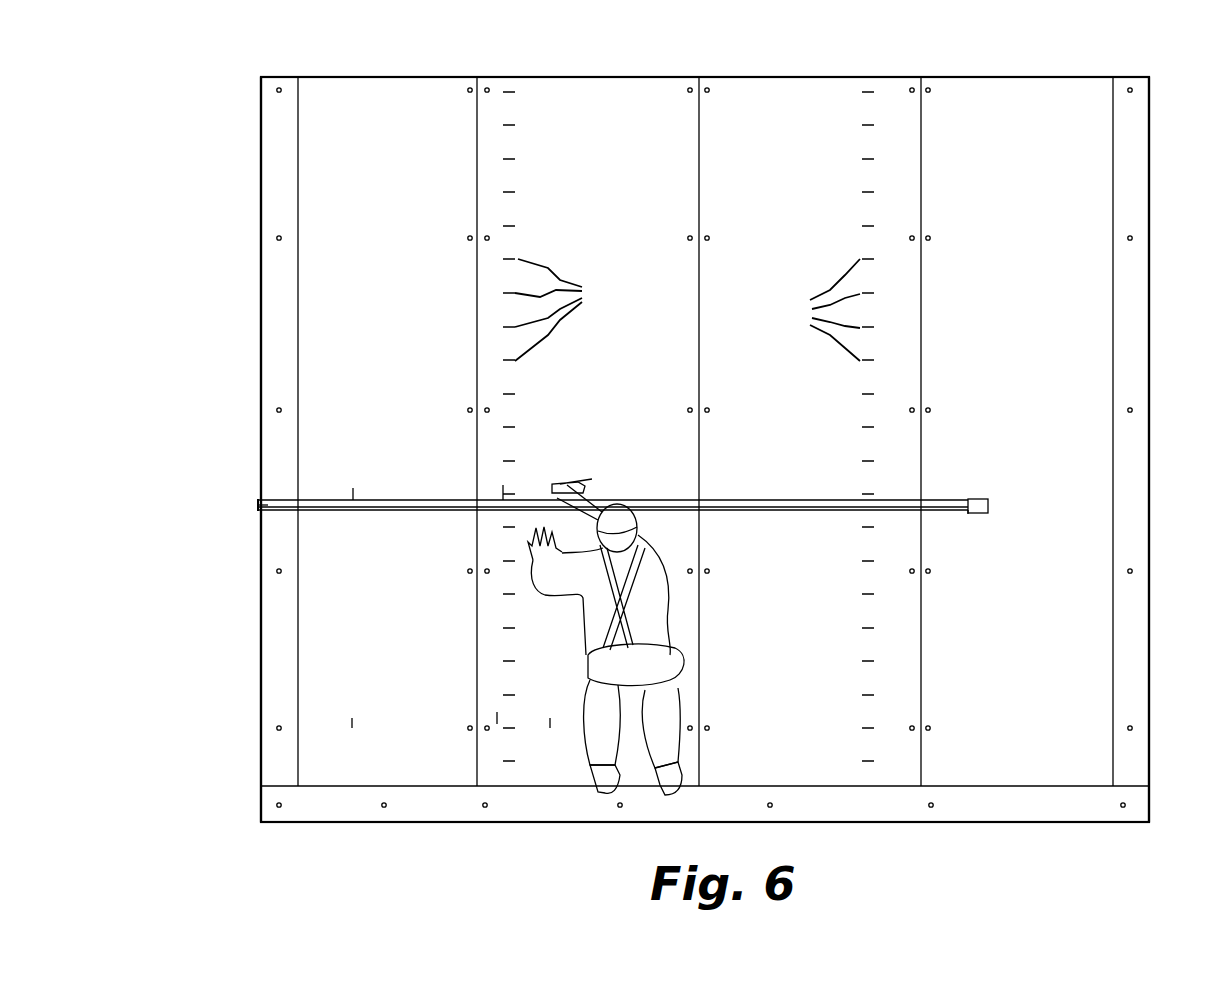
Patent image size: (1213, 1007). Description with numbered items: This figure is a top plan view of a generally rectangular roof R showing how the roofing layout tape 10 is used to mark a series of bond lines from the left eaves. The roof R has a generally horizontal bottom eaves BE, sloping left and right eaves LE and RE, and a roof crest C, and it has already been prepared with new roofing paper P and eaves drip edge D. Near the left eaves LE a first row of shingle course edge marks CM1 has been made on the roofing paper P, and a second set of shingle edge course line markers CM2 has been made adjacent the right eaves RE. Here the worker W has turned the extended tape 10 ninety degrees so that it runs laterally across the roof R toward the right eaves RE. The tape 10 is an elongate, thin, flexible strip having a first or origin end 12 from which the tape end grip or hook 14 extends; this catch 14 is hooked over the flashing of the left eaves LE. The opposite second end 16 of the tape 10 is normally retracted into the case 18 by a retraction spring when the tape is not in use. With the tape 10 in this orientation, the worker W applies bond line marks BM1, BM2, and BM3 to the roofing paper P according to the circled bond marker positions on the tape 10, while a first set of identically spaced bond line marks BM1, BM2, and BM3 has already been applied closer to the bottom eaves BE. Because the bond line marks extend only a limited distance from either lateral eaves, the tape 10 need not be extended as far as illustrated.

The roof R is at (340, 845).
The roof crest C is at (620, 77).
The left eaves LE is at (260, 258).
The right eaves RE is at (1150, 462).
The bottom eaves BE is at (550, 823).
The eaves drip edge D is at (275, 348).
The roofing paper P is at (327, 630).
The shingle course edge marks CM1 is at (569, 426).
The second set of shingle edge course line markers CM2 is at (811, 426).
The roofing layout tape 10 is at (715, 478).
The first or origin end 12 is at (268, 500).
The tape end grip or hook 14 is at (260, 510).
The second end 16 is at (965, 515).
The case 18 is at (980, 499).
The bond line mark BM1 is at (355, 490).
The bond line mark BM2 is at (505, 487).
The bond line mark BM3 is at (556, 484).
The worker W is at (672, 622).